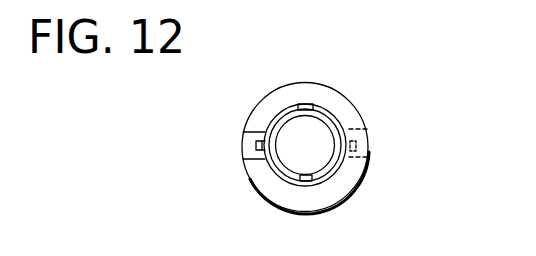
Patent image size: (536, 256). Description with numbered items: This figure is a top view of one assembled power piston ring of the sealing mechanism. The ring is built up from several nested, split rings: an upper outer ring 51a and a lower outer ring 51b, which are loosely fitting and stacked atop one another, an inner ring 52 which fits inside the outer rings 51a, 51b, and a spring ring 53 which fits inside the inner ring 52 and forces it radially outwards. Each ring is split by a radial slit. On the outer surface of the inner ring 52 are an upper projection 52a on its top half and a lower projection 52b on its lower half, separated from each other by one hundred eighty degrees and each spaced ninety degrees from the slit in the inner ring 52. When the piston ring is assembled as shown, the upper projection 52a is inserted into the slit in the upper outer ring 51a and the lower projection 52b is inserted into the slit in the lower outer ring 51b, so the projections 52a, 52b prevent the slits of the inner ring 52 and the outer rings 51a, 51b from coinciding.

The upper outer ring 51a is at (262, 112).
The lower outer ring 51b is at (258, 139).
The inner ring 52 is at (322, 109).
The upper projection 52a is at (259, 148).
The lower projection 52b is at (358, 140).
The spring ring 53 is at (326, 172).